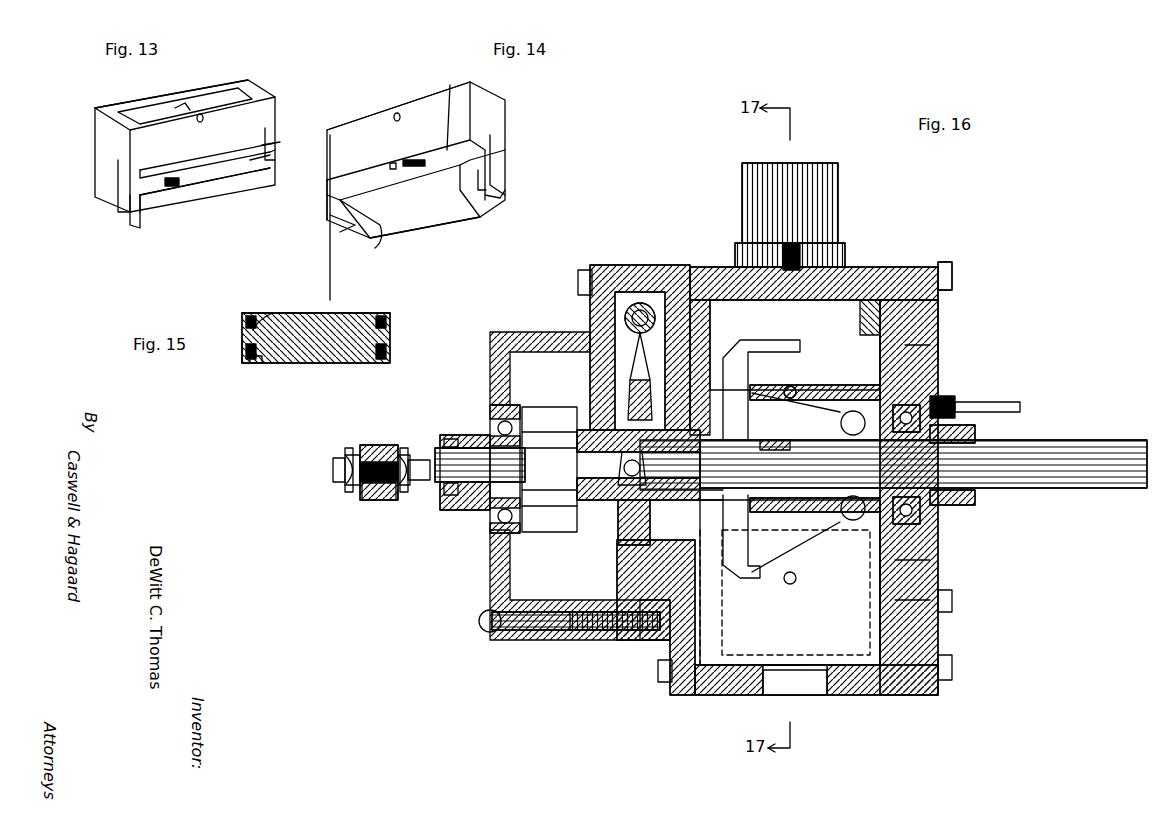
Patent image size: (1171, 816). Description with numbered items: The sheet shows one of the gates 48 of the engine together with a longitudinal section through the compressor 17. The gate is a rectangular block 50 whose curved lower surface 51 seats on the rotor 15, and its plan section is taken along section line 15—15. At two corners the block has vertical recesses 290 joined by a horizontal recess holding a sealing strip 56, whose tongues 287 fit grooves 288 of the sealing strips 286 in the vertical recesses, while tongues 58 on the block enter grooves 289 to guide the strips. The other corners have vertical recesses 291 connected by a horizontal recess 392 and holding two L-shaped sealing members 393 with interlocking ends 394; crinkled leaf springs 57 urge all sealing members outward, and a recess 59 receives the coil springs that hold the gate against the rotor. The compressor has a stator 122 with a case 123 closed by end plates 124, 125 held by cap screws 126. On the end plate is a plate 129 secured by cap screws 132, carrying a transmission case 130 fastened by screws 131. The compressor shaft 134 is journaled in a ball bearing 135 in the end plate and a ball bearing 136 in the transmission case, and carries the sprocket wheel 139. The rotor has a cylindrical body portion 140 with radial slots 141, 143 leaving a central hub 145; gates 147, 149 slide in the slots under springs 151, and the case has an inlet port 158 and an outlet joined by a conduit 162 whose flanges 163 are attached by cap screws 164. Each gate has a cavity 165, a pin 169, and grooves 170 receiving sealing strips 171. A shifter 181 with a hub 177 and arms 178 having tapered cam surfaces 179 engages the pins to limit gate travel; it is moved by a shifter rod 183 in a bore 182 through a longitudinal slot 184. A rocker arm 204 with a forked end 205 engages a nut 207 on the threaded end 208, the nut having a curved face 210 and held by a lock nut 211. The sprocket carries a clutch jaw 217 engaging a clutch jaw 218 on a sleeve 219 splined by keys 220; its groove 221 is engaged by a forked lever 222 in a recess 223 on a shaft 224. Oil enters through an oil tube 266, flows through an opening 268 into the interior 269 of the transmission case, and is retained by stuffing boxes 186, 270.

In FIG. 13, the rotor 15 is at (60, 195).
In FIG. 16, the compressor 17 is at (945, 262).
In FIG. 13, the gate 48 is at (94, 108).
In FIG. 14, the gate 48 is at (378, 113).
In FIG. 15, the gate 48 is at (335, 313).
In FIG. 13, the rectangular block 50 is at (262, 110).
In FIG. 14, the rectangular block 50 is at (487, 103).
In FIG. 15, the rectangular block 50 is at (310, 350).
In FIG. 14, the lower surface 51 is at (405, 218).
In FIG. 13, the sealing strip 56 is at (240, 165).
In FIG. 14, the sealing strip 56 is at (330, 200).
In FIG. 13, the crinkled leaf spring 57 is at (180, 184).
In FIG. 14, the crinkled leaf spring 57 is at (412, 160).
In FIG. 15, the crinkled leaf spring 57 is at (258, 325).
In FIG. 13, the tongue 58 is at (133, 218).
In FIG. 14, the tongue 58 is at (482, 195).
In FIG. 15, the tongue 58 is at (258, 363).
In FIG. 13, the recess 59 is at (222, 97).
In FIG. 16, the stator 122 is at (690, 695).
In FIG. 16, the case 123 is at (862, 690).
In FIG. 16, the end plate 124 is at (920, 575).
In FIG. 16, the end plate 125 is at (680, 625).
In FIG. 16, the cap screws 126 is at (955, 275).
In FIG. 16, the plate 129 is at (600, 265).
In FIG. 16, the transmission case 130 is at (520, 332).
In FIG. 16, the screws 131 is at (484, 628).
In FIG. 16, the cap screws 132 is at (578, 282).
In FIG. 16, the compressor shaft 134 is at (1055, 490).
In FIG. 16, the ball bearing 135 is at (912, 412).
In FIG. 16, the ball bearing 136 is at (470, 510).
In FIG. 16, the sprocket wheel 139 is at (552, 440).
In FIG. 16, the cylindrical body portion 140 is at (900, 350).
In FIG. 16, the radial slot 141 is at (930, 350).
In FIG. 16, the radial slot 143 is at (895, 597).
In FIG. 16, the central hub 145 is at (845, 560).
In FIG. 16, the gate 147 is at (870, 300).
In FIG. 16, the gate 149 is at (760, 668).
In FIG. 16, the springs 151 is at (812, 560).
In FIG. 16, the inlet port 158 is at (805, 680).
In FIG. 16, the conduit 162 is at (812, 180).
In FIG. 16, the flanges 163 is at (840, 258).
In FIG. 16, the cap screws 164 is at (785, 248).
In FIG. 16, the cavity 165 is at (740, 310).
In FIG. 16, the pin 169 is at (797, 390).
In FIG. 16, the grooves 170 is at (880, 325).
In FIG. 16, the sealing strips 171 is at (940, 330).
In FIG. 16, the hub 177 is at (722, 505).
In FIG. 16, the arms 178 is at (737, 370).
In FIG. 16, the tapered cam surfaces 179 is at (775, 385).
In FIG. 16, the shifter 181 is at (778, 352).
In FIG. 16, the bore 182 is at (500, 430).
In FIG. 16, the shifter rod 183 is at (438, 478).
In FIG. 16, the longitudinal slot 184 is at (772, 440).
In FIG. 16, the stuffing box 186 is at (446, 487).
In FIG. 16, the rocker arm 204 is at (380, 445).
In FIG. 16, the forked end 205 is at (372, 500).
In FIG. 16, the nut 207 is at (345, 462).
In FIG. 16, the threaded end 208 is at (333, 470).
In FIG. 16, the curved face 210 is at (358, 452).
In FIG. 16, the lock nut 211 is at (404, 450).
In FIG. 16, the clutch jaw 217 is at (572, 500).
In FIG. 16, the clutch jaw 218 is at (620, 540).
In FIG. 16, the sleeve 219 is at (607, 430).
In FIG. 16, the keys 220 is at (680, 445).
In FIG. 16, the groove 221 is at (632, 478).
In FIG. 16, the forked lever 222 is at (612, 350).
In FIG. 16, the recess 223 is at (640, 300).
In FIG. 16, the shaft 224 is at (643, 305).
In FIG. 16, the oil tube 266 is at (988, 405).
In FIG. 16, the opening 268 is at (555, 630).
In FIG. 16, the interior 269 is at (575, 627).
In FIG. 16, the stuffing box 270 is at (968, 505).
In FIG. 13, the sealing strip 286 is at (275, 142).
In FIG. 15, the sealing strip 286 is at (250, 350).
In FIG. 13, the tongues 287 is at (268, 160).
In FIG. 13, the grooves 288 is at (300, 135).
In FIG. 14, the grooves 289 is at (500, 195).
In FIG. 15, the grooves 289 is at (250, 365).
In FIG. 13, the vertical recesses 290 is at (118, 172).
In FIG. 14, the vertical recesses 291 is at (480, 170).
In FIG. 14, the horizontal recess 392 is at (460, 102).
In FIG. 14, the L-shaped sealing members 393 is at (350, 182).
In FIG. 15, the L-shaped sealing members 393 is at (252, 318).
In FIG. 14, the interlocking ends 394 is at (392, 163).